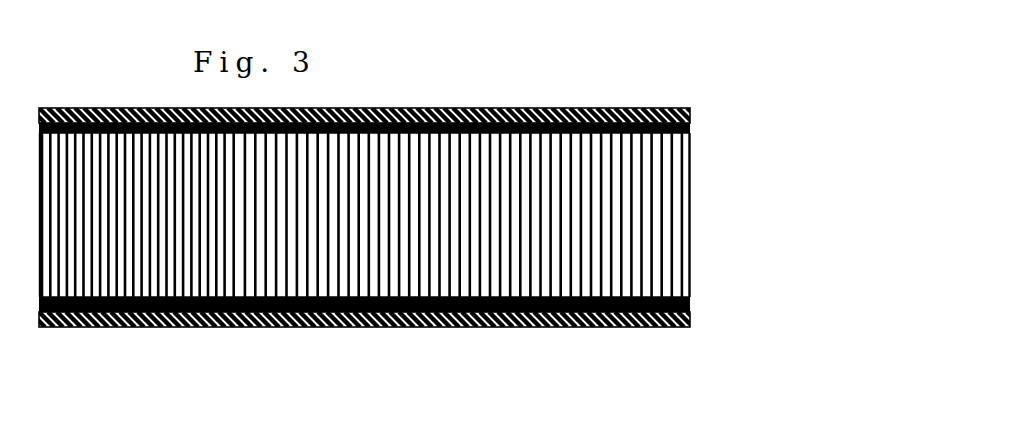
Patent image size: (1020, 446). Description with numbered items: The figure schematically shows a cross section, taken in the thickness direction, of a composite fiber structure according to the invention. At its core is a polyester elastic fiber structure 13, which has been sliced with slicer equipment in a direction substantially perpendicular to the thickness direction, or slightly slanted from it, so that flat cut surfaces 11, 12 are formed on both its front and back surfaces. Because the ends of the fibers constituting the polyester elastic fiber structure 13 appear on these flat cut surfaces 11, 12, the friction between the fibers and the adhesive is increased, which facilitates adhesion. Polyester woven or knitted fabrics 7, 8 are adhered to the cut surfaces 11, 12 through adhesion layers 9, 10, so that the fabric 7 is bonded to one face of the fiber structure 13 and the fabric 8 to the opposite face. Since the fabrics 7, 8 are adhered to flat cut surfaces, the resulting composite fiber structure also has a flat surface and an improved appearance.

The polyester woven knitted fabric 7 is at (463, 108).
The polyester woven knitted fabric 8 is at (410, 327).
The adhesion layer 9 is at (690, 122).
The adhesion layer 10 is at (690, 325).
The cut surface 11 is at (705, 133).
The cut surface 12 is at (703, 297).
The polyester elastic fiber structure 13 is at (668, 232).